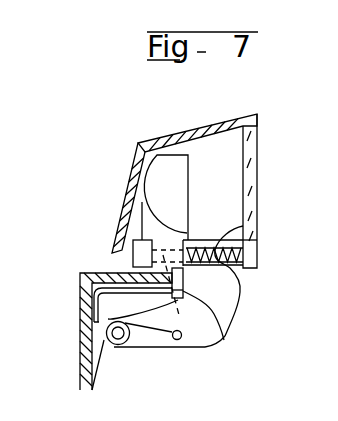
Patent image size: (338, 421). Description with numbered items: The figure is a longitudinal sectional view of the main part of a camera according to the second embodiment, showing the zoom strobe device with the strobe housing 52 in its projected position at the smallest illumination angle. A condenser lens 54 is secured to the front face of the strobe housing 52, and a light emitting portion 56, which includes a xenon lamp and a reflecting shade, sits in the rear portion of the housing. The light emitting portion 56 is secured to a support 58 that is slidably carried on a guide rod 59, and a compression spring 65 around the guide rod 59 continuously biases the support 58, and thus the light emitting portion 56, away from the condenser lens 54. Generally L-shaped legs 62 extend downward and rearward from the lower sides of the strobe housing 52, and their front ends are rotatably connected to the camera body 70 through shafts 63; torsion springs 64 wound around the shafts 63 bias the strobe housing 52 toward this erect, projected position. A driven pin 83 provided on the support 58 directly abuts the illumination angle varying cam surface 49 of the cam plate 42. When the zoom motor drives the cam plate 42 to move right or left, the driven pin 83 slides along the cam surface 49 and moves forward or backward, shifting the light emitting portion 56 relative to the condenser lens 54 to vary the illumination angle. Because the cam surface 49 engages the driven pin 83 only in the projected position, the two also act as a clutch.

The cam plate 42 is at (122, 287).
The illumination angle varying cam surface 49 is at (222, 333).
The strobe housing 52 is at (187, 130).
The condenser lens 54 is at (258, 152).
The light emitting portion 56 is at (182, 196).
The support 58 is at (151, 225).
The guide rod 59 is at (240, 292).
The L-shaped leg 62 is at (198, 343).
The shaft 63 is at (115, 346).
The torsion spring 64 is at (158, 344).
The compression spring 65 is at (257, 228).
The camera body 70 is at (80, 324).
The driven pin 83 is at (184, 288).